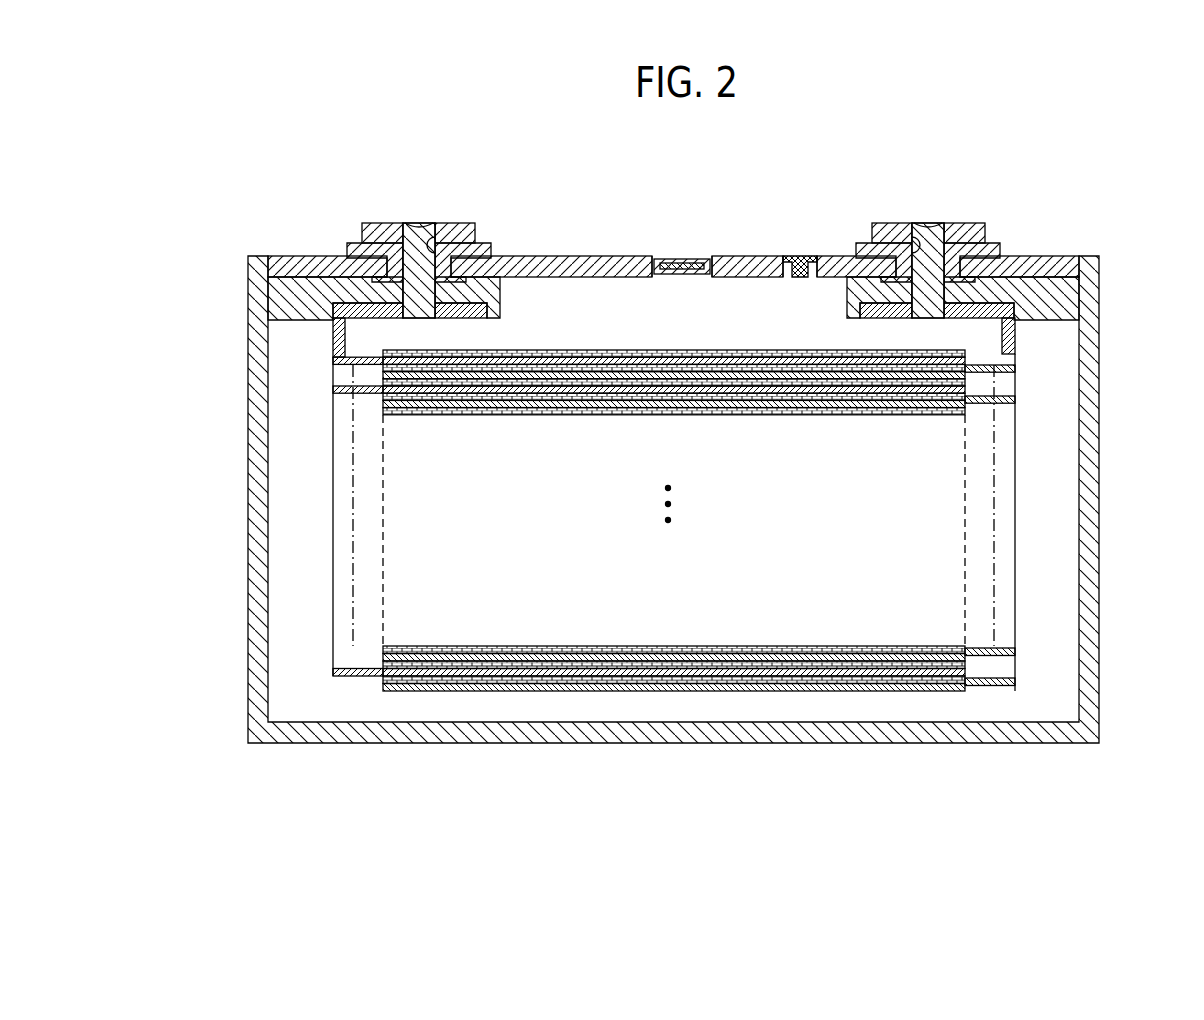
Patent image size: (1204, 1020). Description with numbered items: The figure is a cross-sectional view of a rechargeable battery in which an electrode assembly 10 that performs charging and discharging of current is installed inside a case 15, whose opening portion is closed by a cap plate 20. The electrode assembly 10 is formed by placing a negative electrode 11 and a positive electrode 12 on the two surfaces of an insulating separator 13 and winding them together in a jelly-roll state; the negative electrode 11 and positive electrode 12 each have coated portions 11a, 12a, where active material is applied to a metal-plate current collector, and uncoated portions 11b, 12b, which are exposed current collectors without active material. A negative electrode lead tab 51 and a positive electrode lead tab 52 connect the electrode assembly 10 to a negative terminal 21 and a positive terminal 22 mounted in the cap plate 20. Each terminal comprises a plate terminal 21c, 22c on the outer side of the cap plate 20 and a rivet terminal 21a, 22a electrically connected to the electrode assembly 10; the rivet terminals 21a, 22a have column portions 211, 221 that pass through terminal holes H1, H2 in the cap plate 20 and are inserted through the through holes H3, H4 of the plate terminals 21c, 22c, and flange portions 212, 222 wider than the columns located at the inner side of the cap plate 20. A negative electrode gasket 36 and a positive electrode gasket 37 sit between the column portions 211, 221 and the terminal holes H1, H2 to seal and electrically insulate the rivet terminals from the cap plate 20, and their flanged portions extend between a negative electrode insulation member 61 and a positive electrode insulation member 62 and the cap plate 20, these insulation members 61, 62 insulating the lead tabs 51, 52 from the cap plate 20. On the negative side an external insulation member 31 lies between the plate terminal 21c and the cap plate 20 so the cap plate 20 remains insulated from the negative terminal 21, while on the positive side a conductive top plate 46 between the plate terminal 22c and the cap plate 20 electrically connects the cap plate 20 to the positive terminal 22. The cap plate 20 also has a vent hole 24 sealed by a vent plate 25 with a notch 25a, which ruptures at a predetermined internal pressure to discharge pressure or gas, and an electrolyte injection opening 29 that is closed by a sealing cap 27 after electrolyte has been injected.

The electrode assembly 10 is at (674, 593).
The negative electrode 11 is at (649, 596).
The coated portion 11a is at (467, 685).
The uncoated portion 11b is at (358, 577).
The positive electrode 12 is at (699, 599).
The coated portion 12a is at (870, 688).
The uncoated portion 12b is at (990, 580).
The separator 13 is at (672, 677).
The case 15 is at (1085, 450).
The cap plate 20 is at (578, 268).
The negative terminal 21 is at (316, 225).
The rivet terminal 21a is at (316, 241).
The column portion 211 is at (417, 293).
The flange portion 212 is at (400, 308).
The plate terminal 21c is at (381, 227).
The positive terminal 22 is at (1031, 224).
The rivet terminal 22a is at (1031, 240).
The column portion 221 is at (930, 290).
The flange portion 222 is at (972, 300).
The plate terminal 22c is at (968, 235).
The vent hole 24 is at (692, 267).
The vent plate 25 is at (693, 236).
The notch 25a is at (675, 264).
The sealing cap 27 is at (797, 260).
The electrolyte injection opening 29 is at (800, 271).
The external insulation member 31 is at (482, 247).
The negative electrode gasket 36 is at (353, 240).
The positive electrode gasket 37 is at (988, 240).
The conductive top plate 46 is at (862, 248).
The negative electrode lead tab 51 is at (343, 343).
The positive electrode lead tab 52 is at (1013, 338).
The negative electrode insulation member 61 is at (283, 297).
The positive electrode insulation member 62 is at (1060, 293).
The terminal hole H1 is at (428, 245).
The terminal hole H2 is at (917, 244).
The through hole H3 is at (416, 222).
The through hole H4 is at (933, 220).